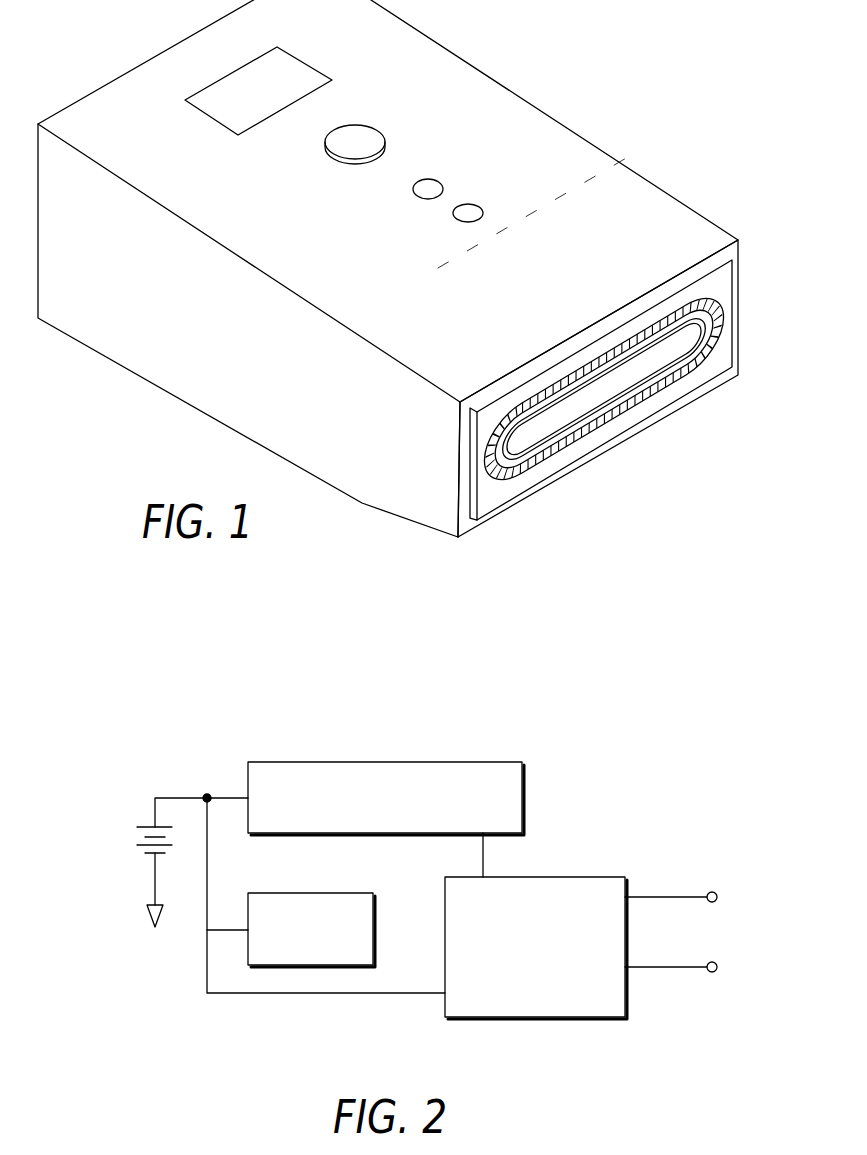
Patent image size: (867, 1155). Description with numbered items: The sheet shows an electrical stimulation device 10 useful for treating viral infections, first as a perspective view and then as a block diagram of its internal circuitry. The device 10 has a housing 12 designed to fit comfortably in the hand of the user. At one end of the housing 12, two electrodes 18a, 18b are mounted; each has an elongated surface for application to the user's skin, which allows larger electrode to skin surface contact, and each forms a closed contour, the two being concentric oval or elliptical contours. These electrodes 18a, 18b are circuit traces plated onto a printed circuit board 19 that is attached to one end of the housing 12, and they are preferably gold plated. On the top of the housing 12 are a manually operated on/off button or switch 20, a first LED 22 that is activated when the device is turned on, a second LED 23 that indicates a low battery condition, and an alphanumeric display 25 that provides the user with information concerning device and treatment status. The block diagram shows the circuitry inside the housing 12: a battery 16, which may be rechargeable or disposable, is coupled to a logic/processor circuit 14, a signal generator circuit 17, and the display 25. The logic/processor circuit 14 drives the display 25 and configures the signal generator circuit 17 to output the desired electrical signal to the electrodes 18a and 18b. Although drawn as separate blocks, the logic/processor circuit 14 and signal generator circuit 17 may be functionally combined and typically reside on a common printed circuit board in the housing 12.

In FIG. 1, the electrical stimulation device 10 is at (603, 115).
In FIG. 1, the housing 12 is at (132, 348).
In FIG. 2, the logic/processor circuit 14 is at (370, 762).
In FIG. 2, the battery 16 is at (128, 833).
In FIG. 2, the signal generator circuit 17 is at (553, 877).
In FIG. 1, the electrode 18a is at (562, 457).
In FIG. 2, the electrode 18a is at (712, 888).
In FIG. 1, the electrode 18b is at (622, 398).
In FIG. 2, the electrode 18b is at (712, 973).
In FIG. 1, the printed circuit board 19 is at (488, 502).
In FIG. 1, the on/off button or switch 20 is at (358, 135).
In FIG. 1, the first LED 22 is at (432, 179).
In FIG. 1, the second LED 23 is at (473, 211).
In FIG. 1, the alphanumeric display 25 is at (233, 117).
In FIG. 2, the alphanumeric display 25 is at (312, 893).